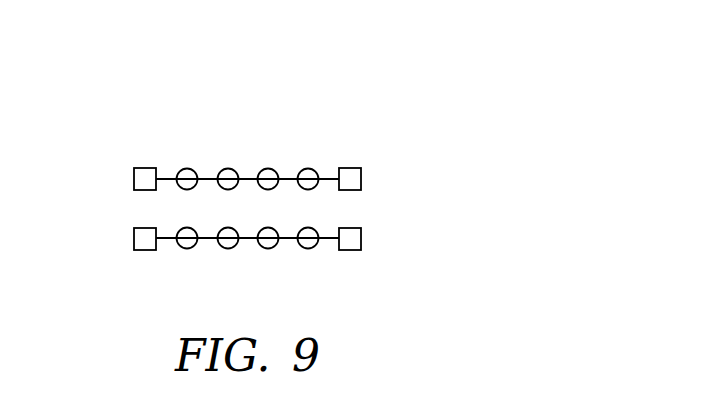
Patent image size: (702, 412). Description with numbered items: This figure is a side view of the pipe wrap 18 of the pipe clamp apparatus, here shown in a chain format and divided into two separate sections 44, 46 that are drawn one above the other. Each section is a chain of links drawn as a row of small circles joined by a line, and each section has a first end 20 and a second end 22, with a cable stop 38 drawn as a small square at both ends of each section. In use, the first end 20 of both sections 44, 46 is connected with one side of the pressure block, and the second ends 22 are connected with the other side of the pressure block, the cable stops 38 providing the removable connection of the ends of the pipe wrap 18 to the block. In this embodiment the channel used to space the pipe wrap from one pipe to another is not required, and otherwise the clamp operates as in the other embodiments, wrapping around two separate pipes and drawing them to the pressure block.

The pipe wrap 18 is at (274, 130).
The first end 20 is at (163, 177).
The second end 22 is at (325, 177).
The cable stop 38 is at (134, 178).
The first section 44 is at (190, 170).
The second section 46 is at (304, 247).